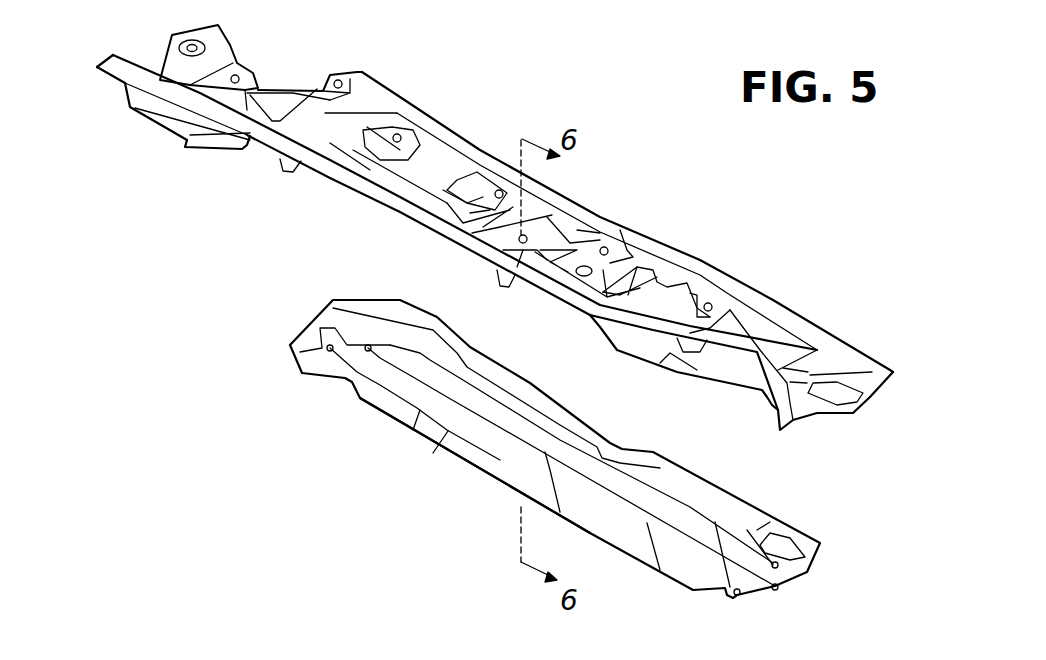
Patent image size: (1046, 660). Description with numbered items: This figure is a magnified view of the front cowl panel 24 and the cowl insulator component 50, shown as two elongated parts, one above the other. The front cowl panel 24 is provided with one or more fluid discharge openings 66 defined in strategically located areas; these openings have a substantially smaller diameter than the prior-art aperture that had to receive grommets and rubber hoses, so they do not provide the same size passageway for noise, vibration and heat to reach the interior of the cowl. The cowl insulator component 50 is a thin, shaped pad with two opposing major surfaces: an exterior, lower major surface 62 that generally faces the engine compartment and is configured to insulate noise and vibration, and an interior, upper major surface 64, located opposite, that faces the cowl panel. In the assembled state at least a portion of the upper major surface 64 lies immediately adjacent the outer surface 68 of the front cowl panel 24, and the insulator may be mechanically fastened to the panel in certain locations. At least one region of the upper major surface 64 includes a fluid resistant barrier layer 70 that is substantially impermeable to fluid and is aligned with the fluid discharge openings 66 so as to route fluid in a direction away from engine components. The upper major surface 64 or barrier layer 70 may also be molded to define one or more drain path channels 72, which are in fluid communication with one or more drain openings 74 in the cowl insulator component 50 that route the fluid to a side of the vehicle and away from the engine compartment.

The front cowl panel 24 is at (495, 227).
The cowl insulator component 50 is at (550, 448).
The lower major surface 62 is at (487, 478).
The upper major surface 64 is at (493, 413).
The fluid discharge openings 66 is at (523, 235).
The outer surface 68 is at (412, 221).
The fluid resistant barrier layer 70 is at (622, 494).
The drain path channel 72 is at (455, 413).
The drain opening 74 is at (329, 352).